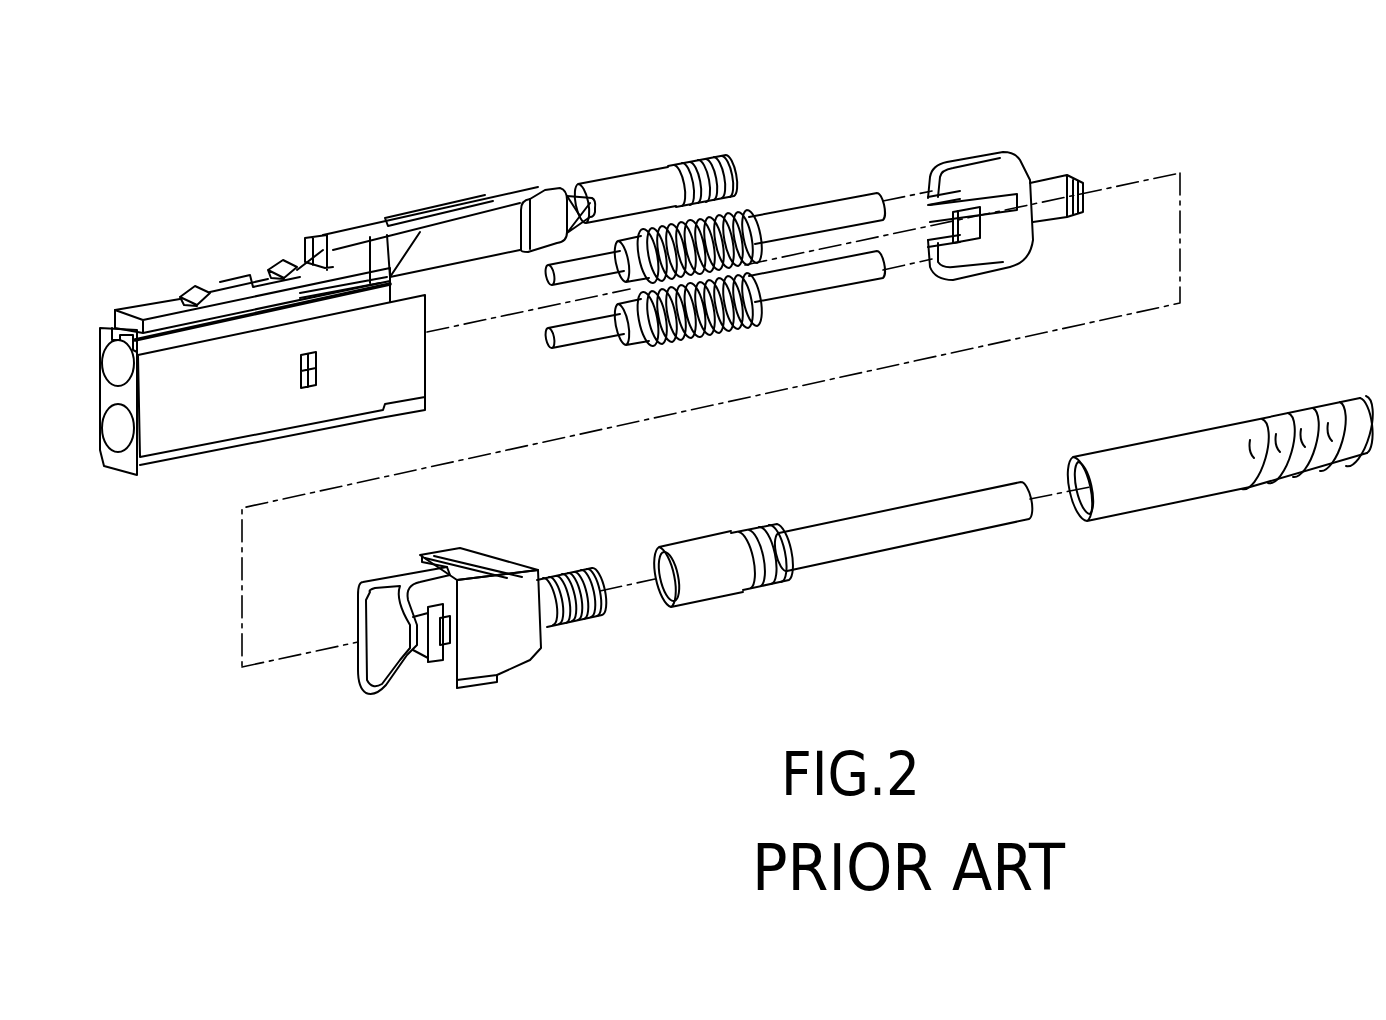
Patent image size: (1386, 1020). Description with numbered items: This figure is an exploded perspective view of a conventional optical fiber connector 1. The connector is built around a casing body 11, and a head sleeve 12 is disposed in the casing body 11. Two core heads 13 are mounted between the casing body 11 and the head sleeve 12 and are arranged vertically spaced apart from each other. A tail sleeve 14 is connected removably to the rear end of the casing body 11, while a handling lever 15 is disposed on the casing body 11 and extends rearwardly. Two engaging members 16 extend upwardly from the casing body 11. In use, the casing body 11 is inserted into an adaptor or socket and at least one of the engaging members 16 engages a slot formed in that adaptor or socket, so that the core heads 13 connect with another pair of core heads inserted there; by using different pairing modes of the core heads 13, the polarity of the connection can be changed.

The optical fiber connector 1 is at (425, 170).
The casing body 11 is at (176, 442).
The head sleeve 12 is at (970, 170).
The core heads 13 is at (801, 213).
The tail sleeve 14 is at (513, 657).
The handling lever 15 is at (637, 183).
The engaging members 16 is at (203, 285).